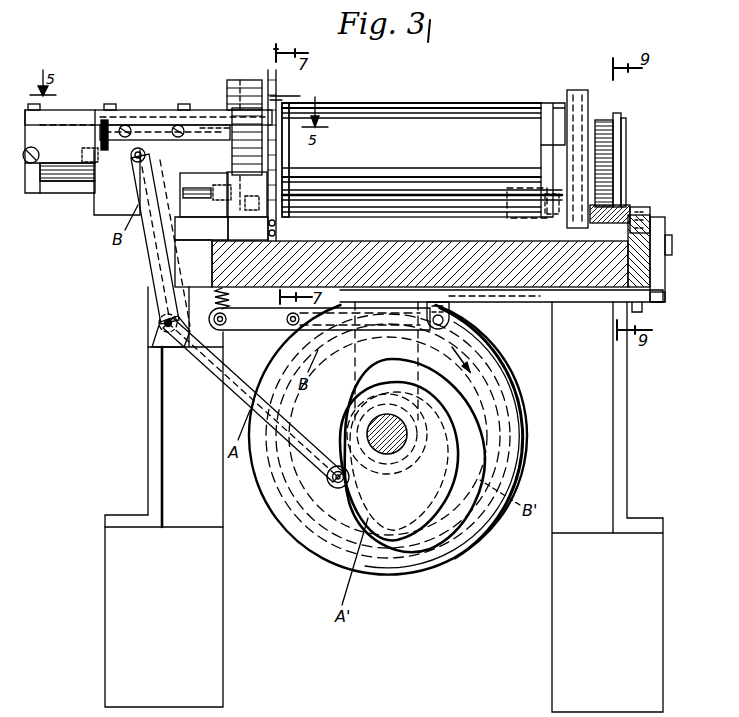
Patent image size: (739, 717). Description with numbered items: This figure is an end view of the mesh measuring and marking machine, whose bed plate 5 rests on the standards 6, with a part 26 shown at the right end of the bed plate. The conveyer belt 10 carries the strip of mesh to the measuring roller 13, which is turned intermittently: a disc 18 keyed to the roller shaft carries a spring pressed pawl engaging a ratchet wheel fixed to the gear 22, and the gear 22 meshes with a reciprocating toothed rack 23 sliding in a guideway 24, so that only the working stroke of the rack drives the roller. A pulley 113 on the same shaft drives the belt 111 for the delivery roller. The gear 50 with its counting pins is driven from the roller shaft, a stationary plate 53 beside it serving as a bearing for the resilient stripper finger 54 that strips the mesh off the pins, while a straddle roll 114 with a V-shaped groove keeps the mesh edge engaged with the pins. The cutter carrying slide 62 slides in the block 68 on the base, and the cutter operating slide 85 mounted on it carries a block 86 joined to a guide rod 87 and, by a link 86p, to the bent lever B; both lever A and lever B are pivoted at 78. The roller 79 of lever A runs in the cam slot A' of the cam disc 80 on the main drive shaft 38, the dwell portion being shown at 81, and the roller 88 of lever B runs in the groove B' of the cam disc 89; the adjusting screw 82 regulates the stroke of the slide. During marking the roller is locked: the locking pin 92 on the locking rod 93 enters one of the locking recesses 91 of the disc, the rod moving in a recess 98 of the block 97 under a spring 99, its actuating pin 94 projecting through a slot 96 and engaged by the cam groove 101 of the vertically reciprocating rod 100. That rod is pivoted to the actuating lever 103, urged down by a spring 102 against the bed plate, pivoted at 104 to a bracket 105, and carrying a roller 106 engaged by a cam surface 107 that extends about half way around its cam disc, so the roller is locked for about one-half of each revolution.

The bed plate 5 is at (563, 268).
The standards 6 is at (600, 455).
The conveyer belt 10 is at (512, 103).
The measuring roller 13 is at (411, 160).
The disc 18 is at (583, 88).
The gear 22 is at (604, 120).
The reciprocating toothed rack 23 is at (625, 205).
The guideway 24 is at (650, 210).
The clamp 26 is at (665, 295).
The main drive shaft 38 is at (398, 445).
The gear 50 is at (252, 80).
The stationary plate 53 is at (300, 96).
The resilient stripper finger 54 is at (290, 165).
The cutter carrying slide 62 is at (230, 128).
The block 68 is at (108, 190).
The pivot 78 is at (160, 328).
The roller 79 is at (340, 505).
The cam disc 80 is at (388, 436).
The dwell portion 81 is at (437, 576).
The adjusting screw 82 is at (104, 120).
The cutter operating slide 85 is at (140, 110).
The block 86 is at (38, 133).
The link 86p is at (80, 165).
The guide rod 87 is at (78, 170).
The roller 88 is at (350, 472).
The cam disc 89 is at (298, 500).
The locking recesses 91 is at (572, 84).
The locking pin 92 is at (552, 214).
The locking rod 93 is at (428, 196).
The actuating pin 94 is at (210, 205).
The slot 96 is at (232, 222).
The block 97 is at (230, 185).
The recess 98 is at (221, 185).
The spring 99 is at (192, 188).
The vertically reciprocating rod 100 is at (215, 215).
The cam groove 101 is at (250, 205).
The spring 102 is at (230, 296).
The actuating lever 103 is at (319, 319).
The pivot 104 is at (449, 318).
The bracket 105 is at (450, 302).
The roller 106 is at (300, 323).
The cam surface 107 is at (500, 336).
The belt 111 is at (620, 113).
The pulley 113 is at (627, 142).
The straddle roll 114 is at (266, 80).